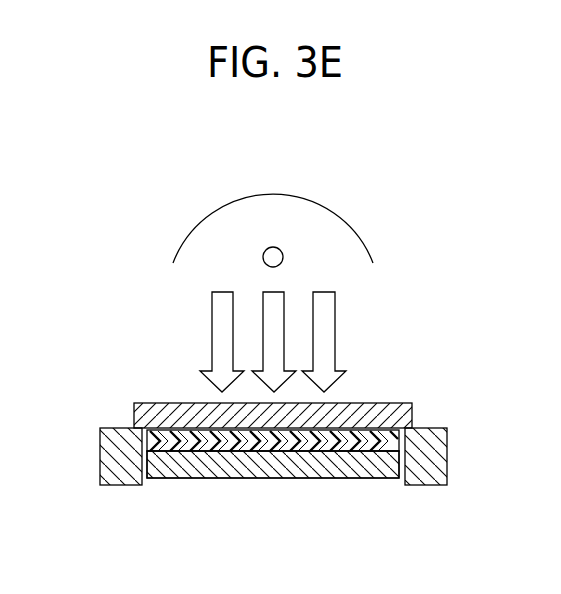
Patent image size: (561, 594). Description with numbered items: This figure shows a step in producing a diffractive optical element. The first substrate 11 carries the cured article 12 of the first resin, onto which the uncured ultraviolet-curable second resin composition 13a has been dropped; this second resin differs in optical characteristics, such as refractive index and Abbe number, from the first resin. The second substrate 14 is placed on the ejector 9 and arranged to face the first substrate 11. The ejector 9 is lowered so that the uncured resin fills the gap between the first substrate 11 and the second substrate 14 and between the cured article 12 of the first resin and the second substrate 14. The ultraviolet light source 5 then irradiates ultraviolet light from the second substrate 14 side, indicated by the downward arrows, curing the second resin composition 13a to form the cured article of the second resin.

The ultraviolet light source 5 is at (285, 257).
The second substrate 14 is at (383, 411).
The ejector 9 is at (430, 450).
The second resin composition 13a is at (152, 438).
The cured article of the first resin 12 is at (357, 452).
The first substrate 11 is at (380, 447).